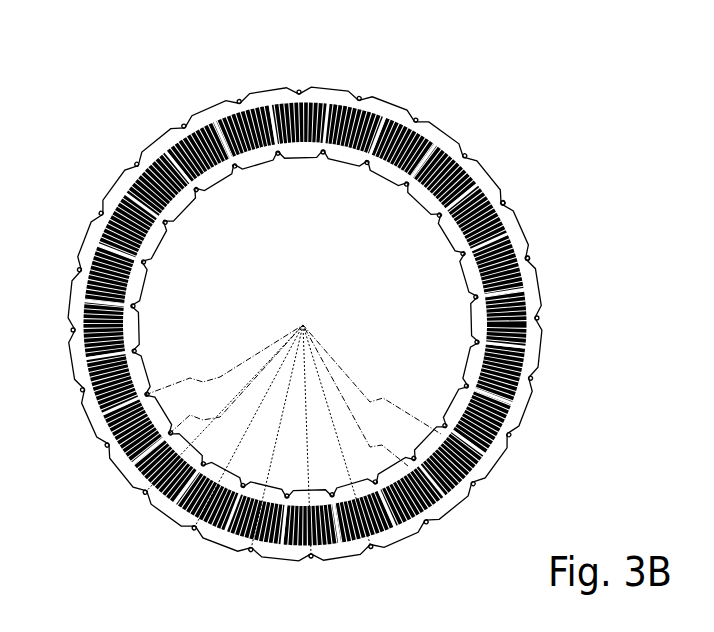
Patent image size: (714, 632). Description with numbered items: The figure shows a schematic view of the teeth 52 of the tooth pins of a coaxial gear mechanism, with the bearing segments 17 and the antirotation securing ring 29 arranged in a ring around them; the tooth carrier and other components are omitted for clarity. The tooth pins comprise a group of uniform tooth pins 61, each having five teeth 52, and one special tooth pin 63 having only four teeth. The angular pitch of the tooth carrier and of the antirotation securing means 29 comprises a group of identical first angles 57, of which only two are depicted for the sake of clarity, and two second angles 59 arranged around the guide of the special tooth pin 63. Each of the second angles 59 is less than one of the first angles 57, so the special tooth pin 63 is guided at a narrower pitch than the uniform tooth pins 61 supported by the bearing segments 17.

The bearing segment 17 is at (505, 203).
The antirotation securing ring 29 is at (523, 228).
The teeth 52 is at (345, 70).
The first angle 57 is at (145, 395).
The second angle 59 is at (169, 434).
The uniform tooth pin 61 is at (147, 491).
The special tooth pin 63 is at (251, 548).